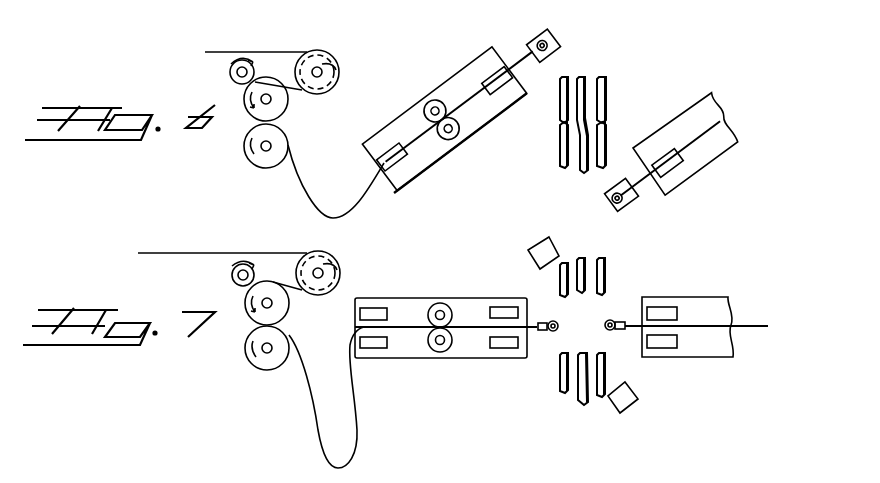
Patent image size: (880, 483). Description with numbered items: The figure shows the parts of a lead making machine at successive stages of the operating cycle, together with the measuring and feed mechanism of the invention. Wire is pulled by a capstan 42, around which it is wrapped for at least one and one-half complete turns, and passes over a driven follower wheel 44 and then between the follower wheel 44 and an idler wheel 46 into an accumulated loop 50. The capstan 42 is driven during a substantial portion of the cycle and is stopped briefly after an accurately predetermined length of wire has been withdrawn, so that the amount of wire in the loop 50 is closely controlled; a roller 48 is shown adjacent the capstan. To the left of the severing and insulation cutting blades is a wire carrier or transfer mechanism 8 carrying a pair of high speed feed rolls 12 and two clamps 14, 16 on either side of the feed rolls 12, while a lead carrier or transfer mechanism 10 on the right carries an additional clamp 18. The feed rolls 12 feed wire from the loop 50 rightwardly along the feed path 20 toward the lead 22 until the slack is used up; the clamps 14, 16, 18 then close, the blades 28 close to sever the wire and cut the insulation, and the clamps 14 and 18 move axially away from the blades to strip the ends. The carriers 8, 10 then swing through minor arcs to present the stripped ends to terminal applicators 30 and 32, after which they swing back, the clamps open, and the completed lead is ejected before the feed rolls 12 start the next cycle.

In FIG. 6, the wire carrier or transfer mechanism 8 is at (400, 118).
In FIG. 7, the wire carrier or transfer mechanism 8 is at (398, 300).
In FIG. 6, the lead carrier or transfer mechanism 10 is at (708, 96).
In FIG. 7, the lead carrier or transfer mechanism 10 is at (716, 302).
In FIG. 6, the high speed feed rolls 12 is at (452, 141).
In FIG. 7, the high speed feed rolls 12 is at (438, 347).
In FIG. 6, the clamp 14 is at (478, 80).
In FIG. 7, the clamp 14 is at (504, 308).
In FIG. 6, the clamp 16 is at (384, 150).
In FIG. 7, the clamp 16 is at (373, 328).
In FIG. 6, the clamp 18 is at (678, 167).
In FIG. 7, the clamp 18 is at (667, 343).
In FIG. 6, the web passage 20 is at (489, 95).
In FIG. 7, the web passage 20 is at (481, 329).
In FIG. 6, the web 22 is at (712, 133).
In FIG. 7, the web 22 is at (757, 322).
In FIG. 6, the cutter block 28 is at (530, 42).
In FIG. 7, the cutter block 28 is at (543, 242).
In FIG. 6, the terminal applicator 30 is at (645, 0).
In FIG. 7, the terminal applicator 30 is at (633, 404).
In FIG. 6, the terminal applicator 32 is at (557, 40).
In FIG. 7, the terminal applicator 32 is at (552, 332).
In FIG. 6, the capstan 42 is at (308, 62).
In FIG. 7, the capstan 42 is at (304, 270).
In FIG. 6, the driven follower wheel 44 is at (273, 99).
In FIG. 7, the driven follower wheel 44 is at (250, 306).
In FIG. 6, the idler wheel 46 is at (266, 146).
In FIG. 7, the idler wheel 46 is at (268, 365).
In FIG. 6, the idler roller 48 is at (236, 64).
In FIG. 7, the idler roller 48 is at (243, 273).
In FIG. 6, the accumulated loop 50 is at (336, 181).
In FIG. 7, the accumulated loop 50 is at (358, 447).